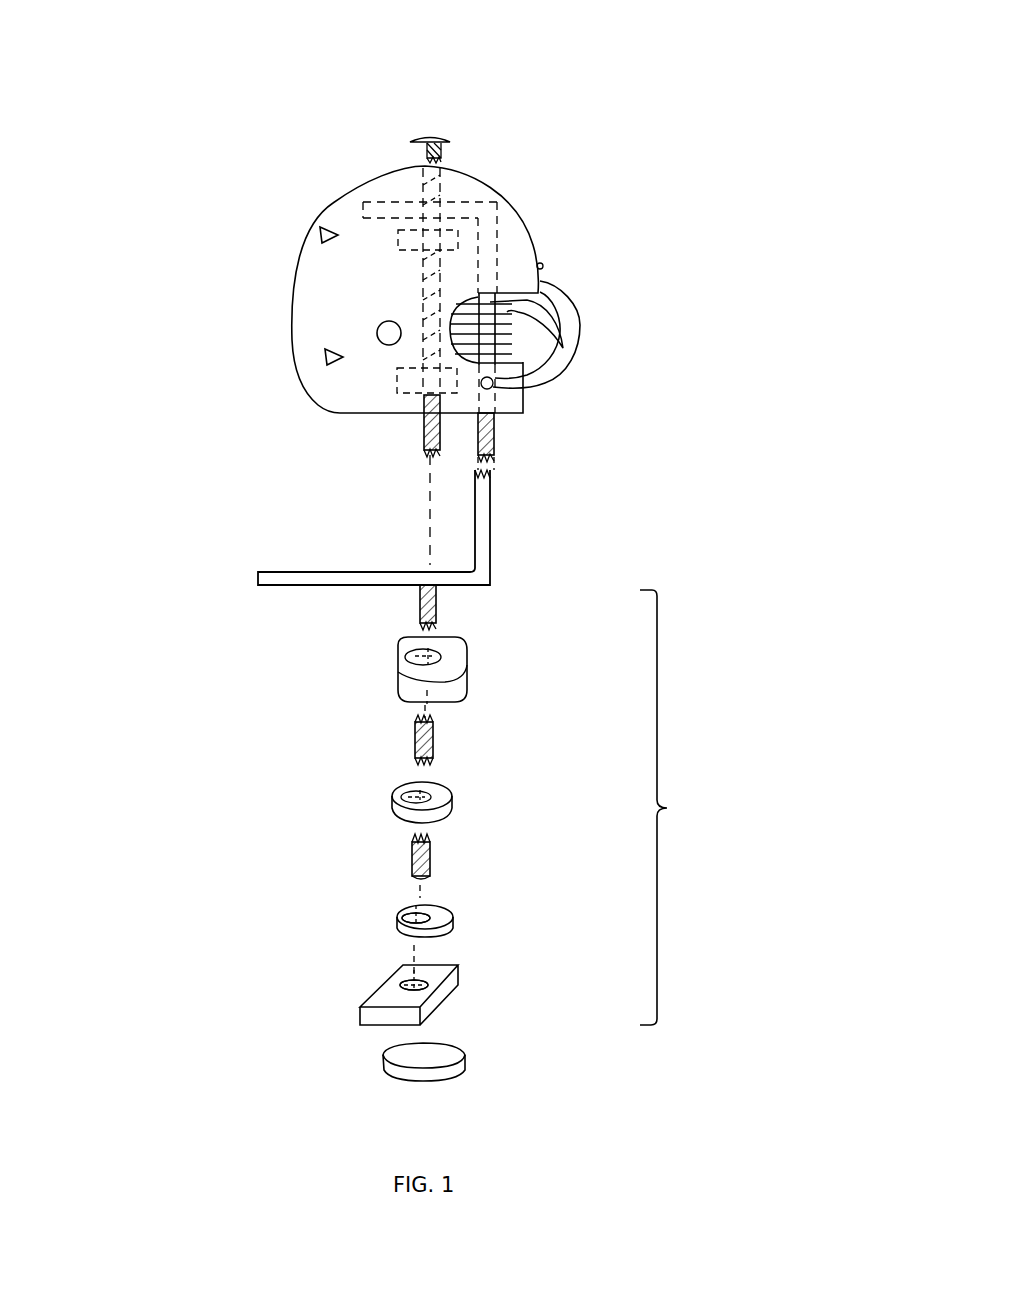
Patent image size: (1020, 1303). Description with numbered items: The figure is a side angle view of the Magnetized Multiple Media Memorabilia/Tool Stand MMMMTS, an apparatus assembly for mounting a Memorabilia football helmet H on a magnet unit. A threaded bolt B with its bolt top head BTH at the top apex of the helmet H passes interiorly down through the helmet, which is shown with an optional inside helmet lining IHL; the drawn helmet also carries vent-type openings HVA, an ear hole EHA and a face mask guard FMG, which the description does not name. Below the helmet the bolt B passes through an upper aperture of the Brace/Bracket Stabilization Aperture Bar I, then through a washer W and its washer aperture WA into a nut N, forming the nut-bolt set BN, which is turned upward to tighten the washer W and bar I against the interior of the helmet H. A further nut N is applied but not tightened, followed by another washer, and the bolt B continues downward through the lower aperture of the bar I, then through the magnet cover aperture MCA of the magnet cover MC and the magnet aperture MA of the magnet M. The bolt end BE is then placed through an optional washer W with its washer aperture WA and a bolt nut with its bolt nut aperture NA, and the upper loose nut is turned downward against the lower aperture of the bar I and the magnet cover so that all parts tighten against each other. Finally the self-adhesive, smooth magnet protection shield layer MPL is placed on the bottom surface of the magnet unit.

The Magnetized Multiple Media Memorabilia/Tool Stand MMMMTS is at (704, 74).
The Memorabilia football helmet H is at (376, 181).
The bolt top head BTH is at (413, 140).
The threaded bolt B is at (442, 151).
The Brace/Bracket Stabilization Aperture Bar I is at (363, 207).
The helmet vent aperture HVA is at (320, 234).
The washer W is at (413, 232).
The ear hole aperture EHA is at (377, 328).
The nut N is at (457, 248).
The inside helmet lining IHL is at (522, 306).
The face mask guard FMG is at (576, 346).
The magnet cover aperture MCA is at (410, 656).
The magnet cover MC is at (466, 678).
The magnet aperture MA is at (395, 794).
The magnet M is at (453, 804).
The bolt end BE is at (432, 854).
The washer aperture WA is at (400, 917).
The bolt nut aperture NA is at (402, 985).
The magnet protection shield layer MPL is at (455, 1071).
The nut-bolt set BN is at (679, 807).